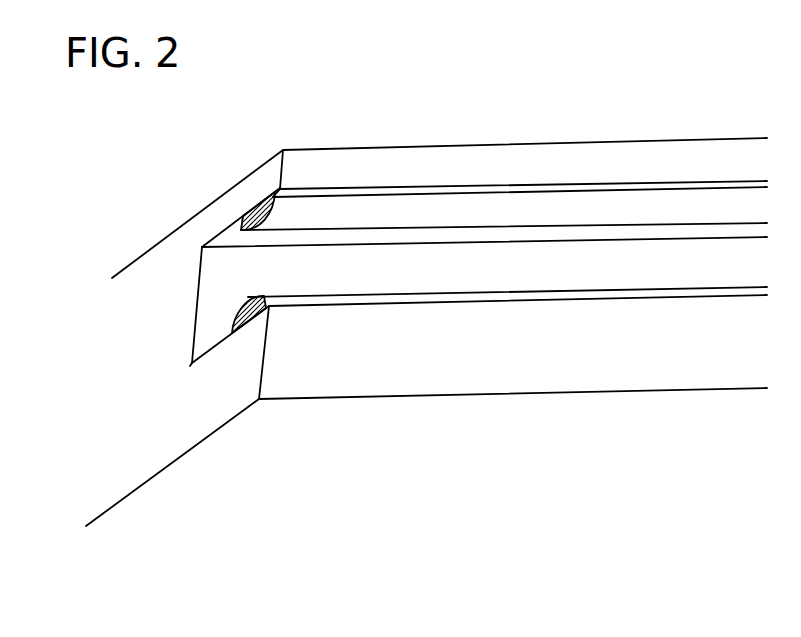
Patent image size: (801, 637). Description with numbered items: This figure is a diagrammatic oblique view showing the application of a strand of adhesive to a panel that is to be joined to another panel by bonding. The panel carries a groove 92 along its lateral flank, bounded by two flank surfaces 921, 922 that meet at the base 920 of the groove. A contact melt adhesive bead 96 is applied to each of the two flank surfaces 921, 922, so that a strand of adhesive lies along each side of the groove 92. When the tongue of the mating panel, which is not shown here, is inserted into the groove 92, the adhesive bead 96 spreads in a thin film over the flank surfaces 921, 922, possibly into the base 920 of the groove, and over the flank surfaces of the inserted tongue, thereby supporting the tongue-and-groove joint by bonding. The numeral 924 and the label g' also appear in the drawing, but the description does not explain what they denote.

The groove 92 is at (538, 272).
The contact melt adhesive bead 96 is at (405, 213).
The flank surface 921 is at (227, 240).
The flank surface 922 is at (222, 335).
The base of the groove 920 is at (230, 287).
The end face 924 is at (213, 287).
The gap g' is at (235, 431).